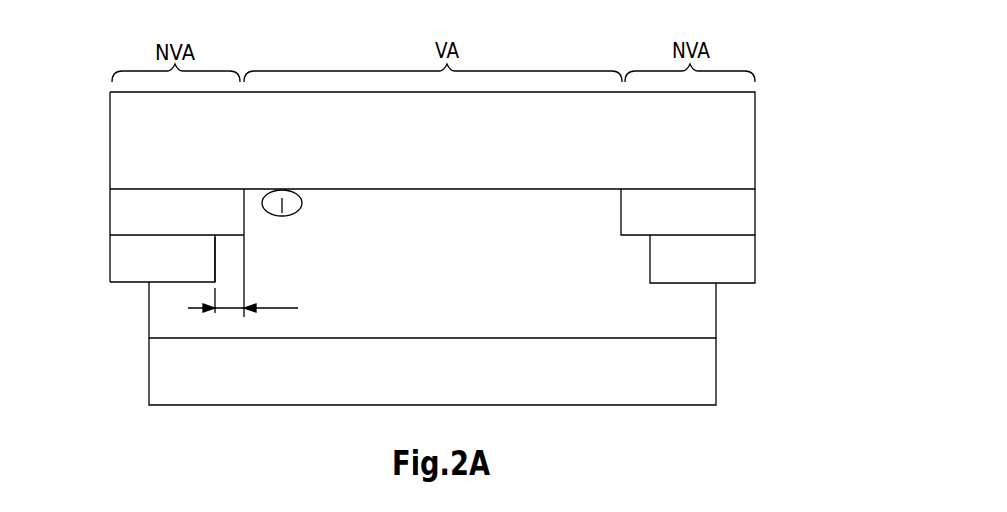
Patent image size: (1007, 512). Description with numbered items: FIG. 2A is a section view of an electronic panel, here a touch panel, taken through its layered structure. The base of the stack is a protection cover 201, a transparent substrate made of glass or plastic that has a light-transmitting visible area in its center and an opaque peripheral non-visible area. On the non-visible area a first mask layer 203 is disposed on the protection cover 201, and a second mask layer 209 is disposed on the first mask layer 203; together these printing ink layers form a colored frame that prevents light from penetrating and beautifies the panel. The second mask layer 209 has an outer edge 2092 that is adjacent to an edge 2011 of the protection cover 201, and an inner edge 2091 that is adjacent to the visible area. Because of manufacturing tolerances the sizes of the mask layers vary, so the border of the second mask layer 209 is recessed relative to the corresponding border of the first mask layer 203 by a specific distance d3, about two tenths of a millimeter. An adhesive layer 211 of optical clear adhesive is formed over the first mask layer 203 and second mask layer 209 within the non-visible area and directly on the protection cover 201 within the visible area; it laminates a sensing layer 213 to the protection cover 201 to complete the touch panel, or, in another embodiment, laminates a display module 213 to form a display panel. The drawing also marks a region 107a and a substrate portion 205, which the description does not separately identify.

The protection cover 201 is at (452, 99).
The edge of the protection cover 2011 is at (110, 120).
The first mask layer 203 is at (735, 213).
The second mask layer 209 is at (444, 261).
The outer edge of the second mask layer 2092 is at (110, 242).
The inner edge of the second mask layer 2091 is at (215, 264).
The light emitting element position 107a is at (288, 215).
The specific distance d3 is at (243, 299).
The second substrate 205 is at (426, 345).
The adhesive layer 211 is at (678, 312).
The sensing layer 213 is at (698, 375).